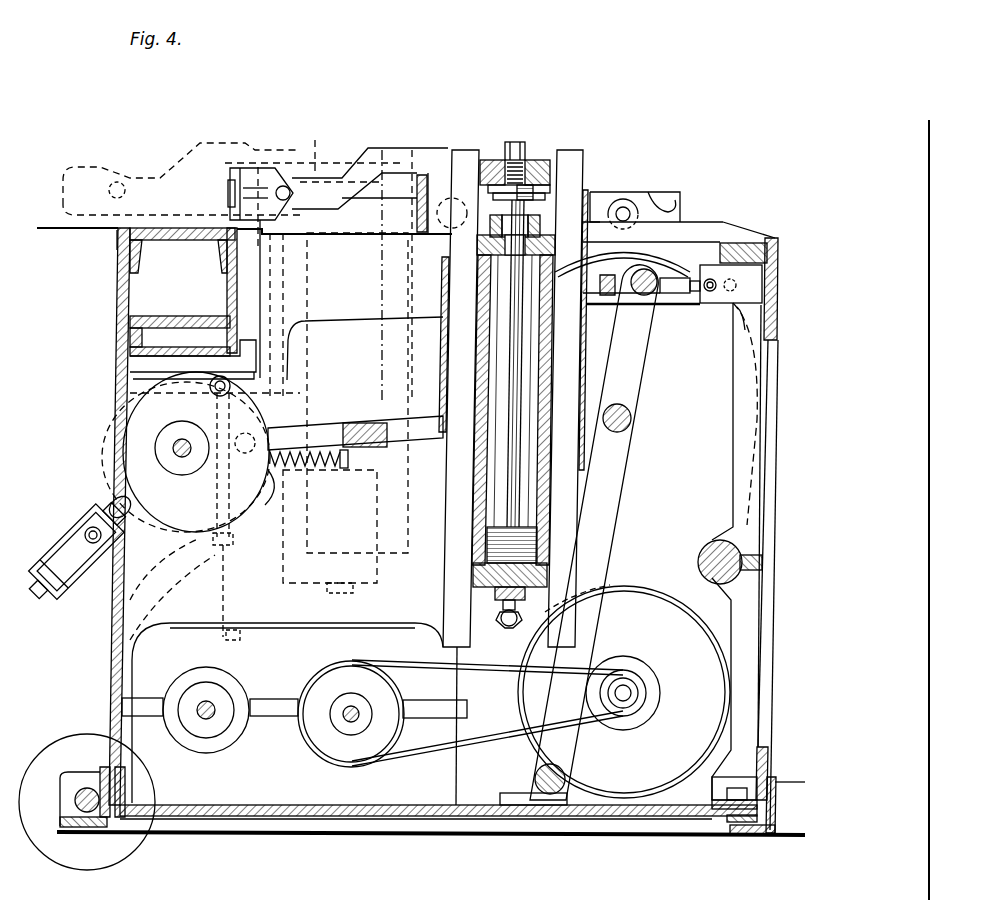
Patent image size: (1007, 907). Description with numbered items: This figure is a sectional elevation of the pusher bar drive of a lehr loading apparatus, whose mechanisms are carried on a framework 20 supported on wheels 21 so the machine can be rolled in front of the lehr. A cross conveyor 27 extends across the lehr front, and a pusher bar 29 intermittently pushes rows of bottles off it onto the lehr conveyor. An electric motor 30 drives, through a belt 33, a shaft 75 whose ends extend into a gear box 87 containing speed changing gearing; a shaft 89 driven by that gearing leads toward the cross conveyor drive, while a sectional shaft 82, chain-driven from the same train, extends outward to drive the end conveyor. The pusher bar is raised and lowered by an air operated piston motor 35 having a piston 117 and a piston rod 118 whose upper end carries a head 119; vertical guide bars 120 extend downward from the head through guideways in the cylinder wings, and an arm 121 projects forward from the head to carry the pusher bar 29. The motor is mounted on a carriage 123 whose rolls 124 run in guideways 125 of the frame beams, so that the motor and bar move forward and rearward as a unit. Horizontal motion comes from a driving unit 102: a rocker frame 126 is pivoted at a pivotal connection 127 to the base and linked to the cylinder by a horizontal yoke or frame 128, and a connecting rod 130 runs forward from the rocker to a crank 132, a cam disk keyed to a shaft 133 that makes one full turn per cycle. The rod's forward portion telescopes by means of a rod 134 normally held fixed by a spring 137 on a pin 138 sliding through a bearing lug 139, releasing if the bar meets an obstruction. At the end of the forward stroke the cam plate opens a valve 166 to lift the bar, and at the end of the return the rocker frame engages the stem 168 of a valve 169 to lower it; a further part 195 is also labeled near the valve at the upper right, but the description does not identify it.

The framework 20 is at (85, 828).
The wheels 21 is at (70, 860).
The cross conveyor 27 is at (172, 229).
The pusher bar 29 is at (238, 166).
The electric motor 30 is at (625, 585).
The belt 33 is at (478, 663).
The piston motor 35 is at (575, 345).
The shaft 75 is at (343, 722).
The shaft 82 is at (718, 545).
The gear box 87 is at (273, 637).
The shaft 89 is at (212, 705).
The driving unit 102 is at (263, 403).
The piston 117 is at (503, 531).
The piston rod 118 is at (510, 477).
The head 119 is at (538, 150).
The vertical guide bars 120 is at (565, 490).
The arm 121 is at (360, 153).
The carriage 123 is at (630, 247).
The rolls 124 is at (600, 212).
The guideways 125 is at (650, 203).
The rocker frame 126 is at (625, 393).
The pivotal connection 127 is at (568, 784).
The yoke or frame 128 is at (640, 300).
The connecting rod 130 is at (393, 425).
The crank 132 is at (180, 527).
The shaft 133 is at (180, 445).
The rod 134 is at (335, 470).
The spring 137 is at (310, 480).
The pin 138 is at (308, 470).
The bearing lug 139 is at (262, 495).
The valve 166 is at (63, 527).
The stem 168 is at (670, 283).
The valve 169 is at (717, 293).
The guide 195 is at (733, 312).